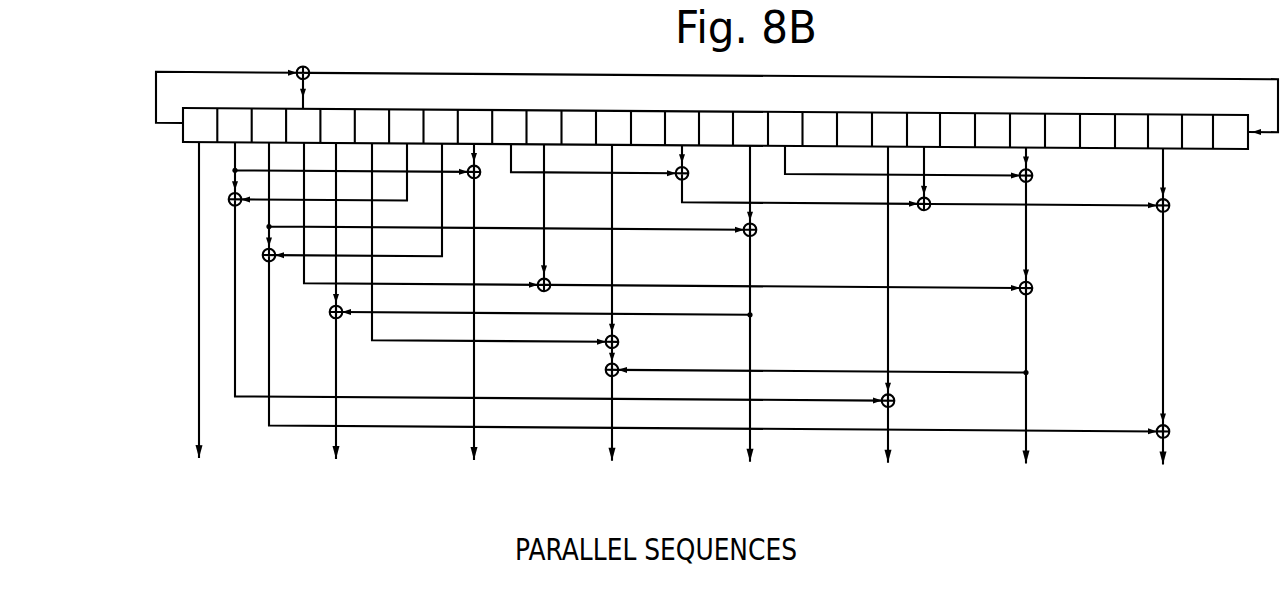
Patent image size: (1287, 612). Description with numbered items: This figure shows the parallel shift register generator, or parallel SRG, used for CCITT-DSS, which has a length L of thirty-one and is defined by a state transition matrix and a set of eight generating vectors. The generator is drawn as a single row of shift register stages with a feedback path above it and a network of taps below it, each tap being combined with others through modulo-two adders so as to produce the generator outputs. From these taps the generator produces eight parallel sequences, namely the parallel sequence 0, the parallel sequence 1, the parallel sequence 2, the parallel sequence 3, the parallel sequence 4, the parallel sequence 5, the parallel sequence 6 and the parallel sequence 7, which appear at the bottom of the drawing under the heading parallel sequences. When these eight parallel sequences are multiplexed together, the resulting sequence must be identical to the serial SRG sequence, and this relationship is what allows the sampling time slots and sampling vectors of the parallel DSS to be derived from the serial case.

The parallel sequence {t_k^0} 0 is at (194, 328).
The parallel sequence {t_k^1} 1 is at (330, 329).
The parallel sequence {t_k^2} 2 is at (468, 329).
The parallel sequence {t_k^3} 3 is at (606, 330).
The parallel sequence {t_k^4} 4 is at (744, 330).
The parallel sequence {t_k^5} 5 is at (881, 331).
The parallel sequence {t_k^6} 6 is at (1019, 331).
The parallel sequence {t_k^7} 7 is at (1155, 331).